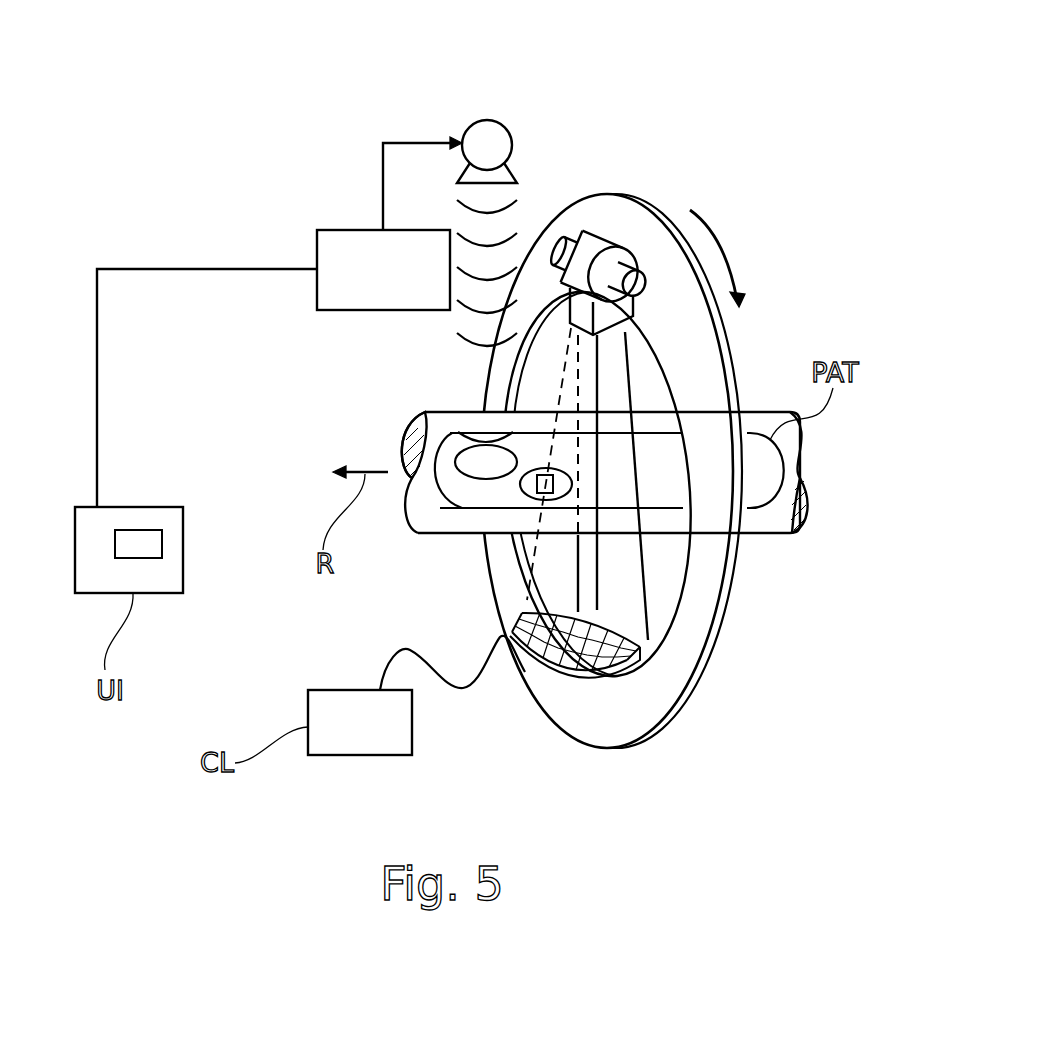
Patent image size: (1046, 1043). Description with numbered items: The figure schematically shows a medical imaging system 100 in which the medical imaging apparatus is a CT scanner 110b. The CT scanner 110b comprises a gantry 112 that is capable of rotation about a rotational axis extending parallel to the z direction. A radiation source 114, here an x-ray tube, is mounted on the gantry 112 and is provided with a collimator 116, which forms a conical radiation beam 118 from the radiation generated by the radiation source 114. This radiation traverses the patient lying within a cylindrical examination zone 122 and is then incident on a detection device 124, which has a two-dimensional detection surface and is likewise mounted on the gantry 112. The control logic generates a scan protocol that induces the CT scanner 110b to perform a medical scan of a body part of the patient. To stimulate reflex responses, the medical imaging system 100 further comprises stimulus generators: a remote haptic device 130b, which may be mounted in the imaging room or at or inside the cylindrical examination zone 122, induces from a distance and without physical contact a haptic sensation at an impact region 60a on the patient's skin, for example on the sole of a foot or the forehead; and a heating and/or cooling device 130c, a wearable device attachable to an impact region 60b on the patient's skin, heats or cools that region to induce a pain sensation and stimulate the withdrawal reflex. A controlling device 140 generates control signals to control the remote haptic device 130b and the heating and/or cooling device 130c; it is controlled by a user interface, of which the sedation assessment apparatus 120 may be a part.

The medical imaging system 100 is at (762, 216).
The CT scanner 110b is at (667, 210).
The gantry 112 is at (657, 697).
The radiation source 114 is at (587, 240).
The collimator 116 is at (607, 313).
The conical radiation beam 118 is at (600, 604).
The sedation assessment apparatus 120 is at (162, 545).
The cylindrical examination zone 122 is at (800, 475).
The detection device 124 is at (560, 673).
The remote haptic device 130b is at (487, 118).
The heating and/or cooling device 130c is at (545, 494).
The controlling device 140 is at (317, 245).
The impact region 60a is at (470, 478).
The impact region 60b is at (520, 484).